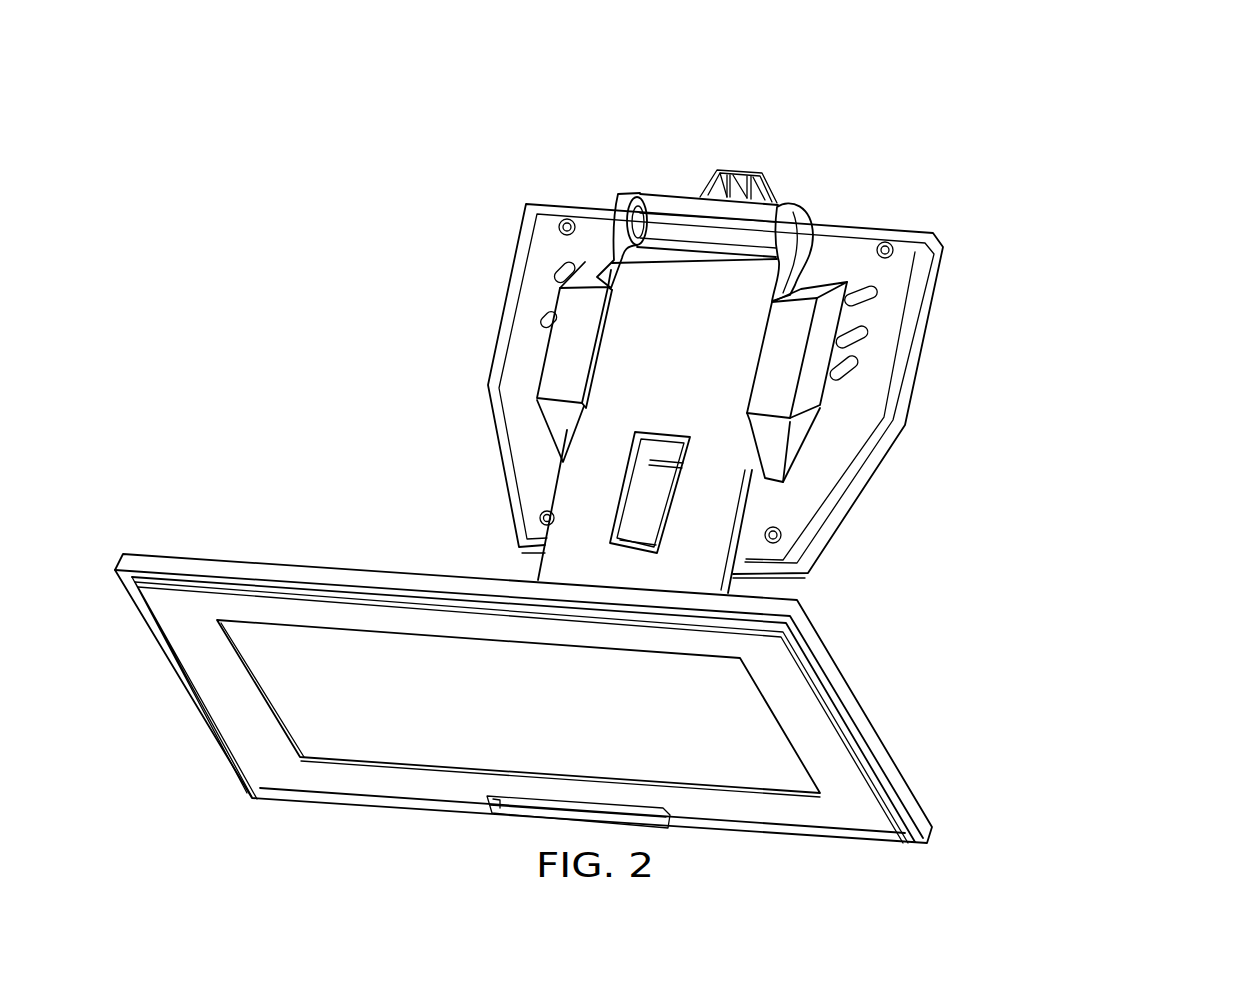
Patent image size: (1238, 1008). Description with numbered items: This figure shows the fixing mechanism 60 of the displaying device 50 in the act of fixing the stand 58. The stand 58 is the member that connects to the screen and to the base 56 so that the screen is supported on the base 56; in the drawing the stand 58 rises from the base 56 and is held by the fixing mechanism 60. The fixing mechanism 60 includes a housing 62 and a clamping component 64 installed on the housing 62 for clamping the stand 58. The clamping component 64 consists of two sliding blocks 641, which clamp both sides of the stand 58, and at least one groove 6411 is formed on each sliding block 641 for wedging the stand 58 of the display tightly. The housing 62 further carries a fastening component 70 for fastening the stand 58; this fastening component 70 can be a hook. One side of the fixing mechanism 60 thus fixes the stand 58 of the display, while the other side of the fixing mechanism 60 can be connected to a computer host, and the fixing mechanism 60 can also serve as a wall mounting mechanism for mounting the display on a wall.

The displaying device 50 is at (1099, 137).
The base 56 is at (197, 570).
The stand 58 is at (562, 573).
The fixing mechanism 60 is at (877, 503).
The housing 62 is at (912, 358).
The clamping component 64 is at (878, 131).
The sliding block 641 is at (595, 278).
The groove 6411 is at (577, 417).
The fastening component 70 is at (660, 553).